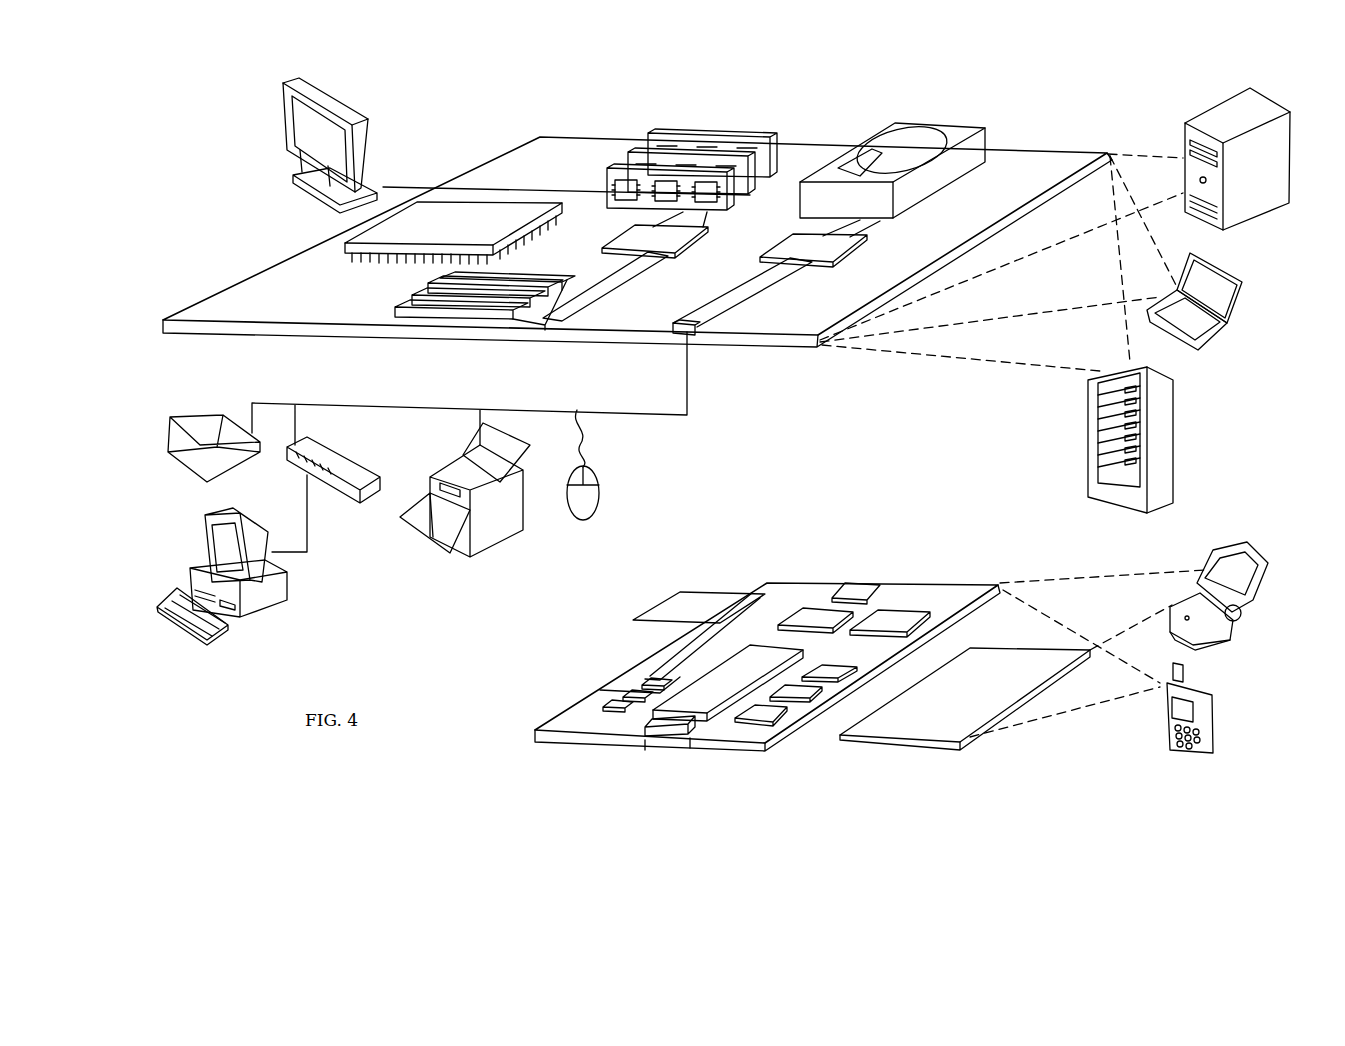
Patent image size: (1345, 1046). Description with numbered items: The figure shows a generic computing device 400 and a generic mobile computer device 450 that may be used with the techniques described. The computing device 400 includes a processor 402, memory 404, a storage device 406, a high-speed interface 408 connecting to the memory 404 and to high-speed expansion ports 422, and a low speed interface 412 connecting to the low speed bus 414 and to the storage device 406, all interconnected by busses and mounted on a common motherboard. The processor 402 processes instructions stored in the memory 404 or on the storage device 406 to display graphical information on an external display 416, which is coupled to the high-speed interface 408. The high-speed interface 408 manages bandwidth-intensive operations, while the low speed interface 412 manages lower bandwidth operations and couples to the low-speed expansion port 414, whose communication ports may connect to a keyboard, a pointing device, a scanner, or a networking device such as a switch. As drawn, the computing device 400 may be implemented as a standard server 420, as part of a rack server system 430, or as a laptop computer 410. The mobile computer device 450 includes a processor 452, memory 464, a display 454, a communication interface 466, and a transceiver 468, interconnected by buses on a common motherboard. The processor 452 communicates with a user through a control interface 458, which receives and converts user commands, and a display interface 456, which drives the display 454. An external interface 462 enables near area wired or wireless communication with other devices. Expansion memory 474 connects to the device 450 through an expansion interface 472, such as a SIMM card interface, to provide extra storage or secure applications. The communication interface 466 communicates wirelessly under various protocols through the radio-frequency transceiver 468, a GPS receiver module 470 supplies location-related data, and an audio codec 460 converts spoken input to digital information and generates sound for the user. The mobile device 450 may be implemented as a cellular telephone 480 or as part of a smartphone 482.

The computing device 400 is at (472, 110).
The processor 402 is at (343, 243).
The memory 404 is at (656, 130).
The storage device 406 is at (890, 126).
The high-speed interface 408 is at (612, 232).
The laptop computer 410 is at (1245, 276).
The low speed interface 412 is at (788, 236).
The low speed bus 414 is at (698, 336).
The display 416 is at (290, 80).
The standard server 420 is at (1185, 138).
The high-speed expansion ports 422 is at (407, 297).
The rack server system 430 is at (1088, 462).
The mobile computer device 450 is at (512, 740).
The processor 452 is at (702, 706).
The display 454 is at (930, 725).
The display interface 456 is at (768, 712).
The control interface 458 is at (798, 695).
The audio codec 460 is at (820, 675).
The external interface 462 is at (667, 745).
The memory 464 is at (618, 692).
The communication interface 466 is at (820, 617).
The transceiver 468 is at (893, 618).
The GPS receiver module 470 is at (860, 587).
The expansion interface 472 is at (748, 592).
The expansion memory 474 is at (683, 592).
The cellular telephone 480 is at (1215, 550).
The smartphone 482 is at (1167, 717).